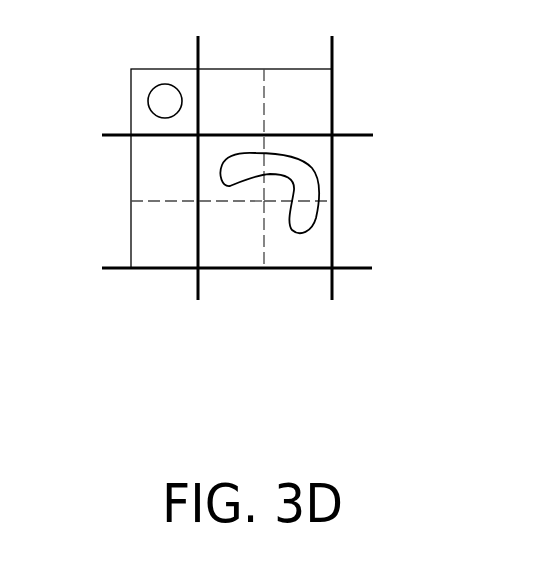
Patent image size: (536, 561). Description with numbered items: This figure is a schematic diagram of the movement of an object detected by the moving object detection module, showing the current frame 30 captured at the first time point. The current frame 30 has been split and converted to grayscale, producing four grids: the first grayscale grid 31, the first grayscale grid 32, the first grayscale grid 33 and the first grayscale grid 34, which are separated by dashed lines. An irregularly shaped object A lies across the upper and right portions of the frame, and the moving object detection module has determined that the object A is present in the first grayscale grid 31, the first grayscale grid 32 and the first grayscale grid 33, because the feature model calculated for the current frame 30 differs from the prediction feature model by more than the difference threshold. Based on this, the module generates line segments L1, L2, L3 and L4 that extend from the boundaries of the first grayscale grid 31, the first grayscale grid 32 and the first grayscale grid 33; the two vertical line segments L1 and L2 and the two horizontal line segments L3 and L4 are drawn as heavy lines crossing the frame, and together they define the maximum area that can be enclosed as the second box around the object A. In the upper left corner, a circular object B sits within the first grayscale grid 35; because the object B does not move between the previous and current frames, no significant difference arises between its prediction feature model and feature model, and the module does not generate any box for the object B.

The current frame 30 is at (131, 82).
The first grayscale grid 31 is at (323, 233).
The first grayscale grid 32 is at (322, 154).
The first grayscale grid 33 is at (232, 150).
The first grayscale grid 34 is at (228, 242).
The first grayscale grid 35 is at (147, 120).
The object A is at (298, 236).
The object B is at (131, 72).
The line segment L1 is at (197, 280).
The line segment L2 is at (333, 287).
The line segment L3 is at (345, 133).
The line segment L4 is at (355, 268).